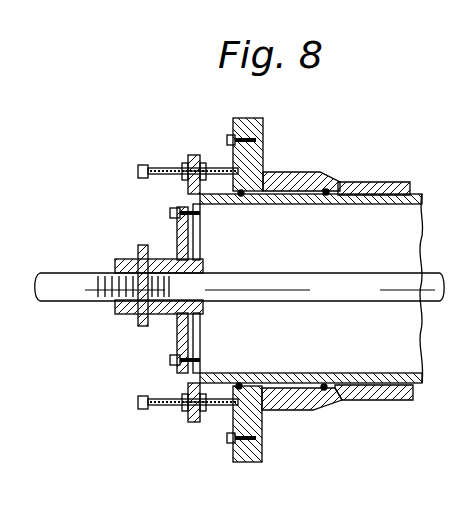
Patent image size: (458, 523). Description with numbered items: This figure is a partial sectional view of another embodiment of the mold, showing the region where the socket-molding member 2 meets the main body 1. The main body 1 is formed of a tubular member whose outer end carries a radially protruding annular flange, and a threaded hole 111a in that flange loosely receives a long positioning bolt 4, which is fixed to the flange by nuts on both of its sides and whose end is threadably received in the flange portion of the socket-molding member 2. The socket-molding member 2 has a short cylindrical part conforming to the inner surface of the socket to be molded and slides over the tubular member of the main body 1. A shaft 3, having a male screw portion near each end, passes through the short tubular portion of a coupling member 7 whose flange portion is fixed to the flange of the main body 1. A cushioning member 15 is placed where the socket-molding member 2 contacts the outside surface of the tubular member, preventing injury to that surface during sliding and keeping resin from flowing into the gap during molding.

The main body 1 is at (393, 186).
The socket-molding member 2 is at (288, 173).
The shaft 3 is at (66, 272).
The long positioning bolt 4 is at (140, 167).
The coupling member 7 is at (400, 183).
The cushioning member 15 is at (326, 189).
The threaded hole 111a is at (182, 178).